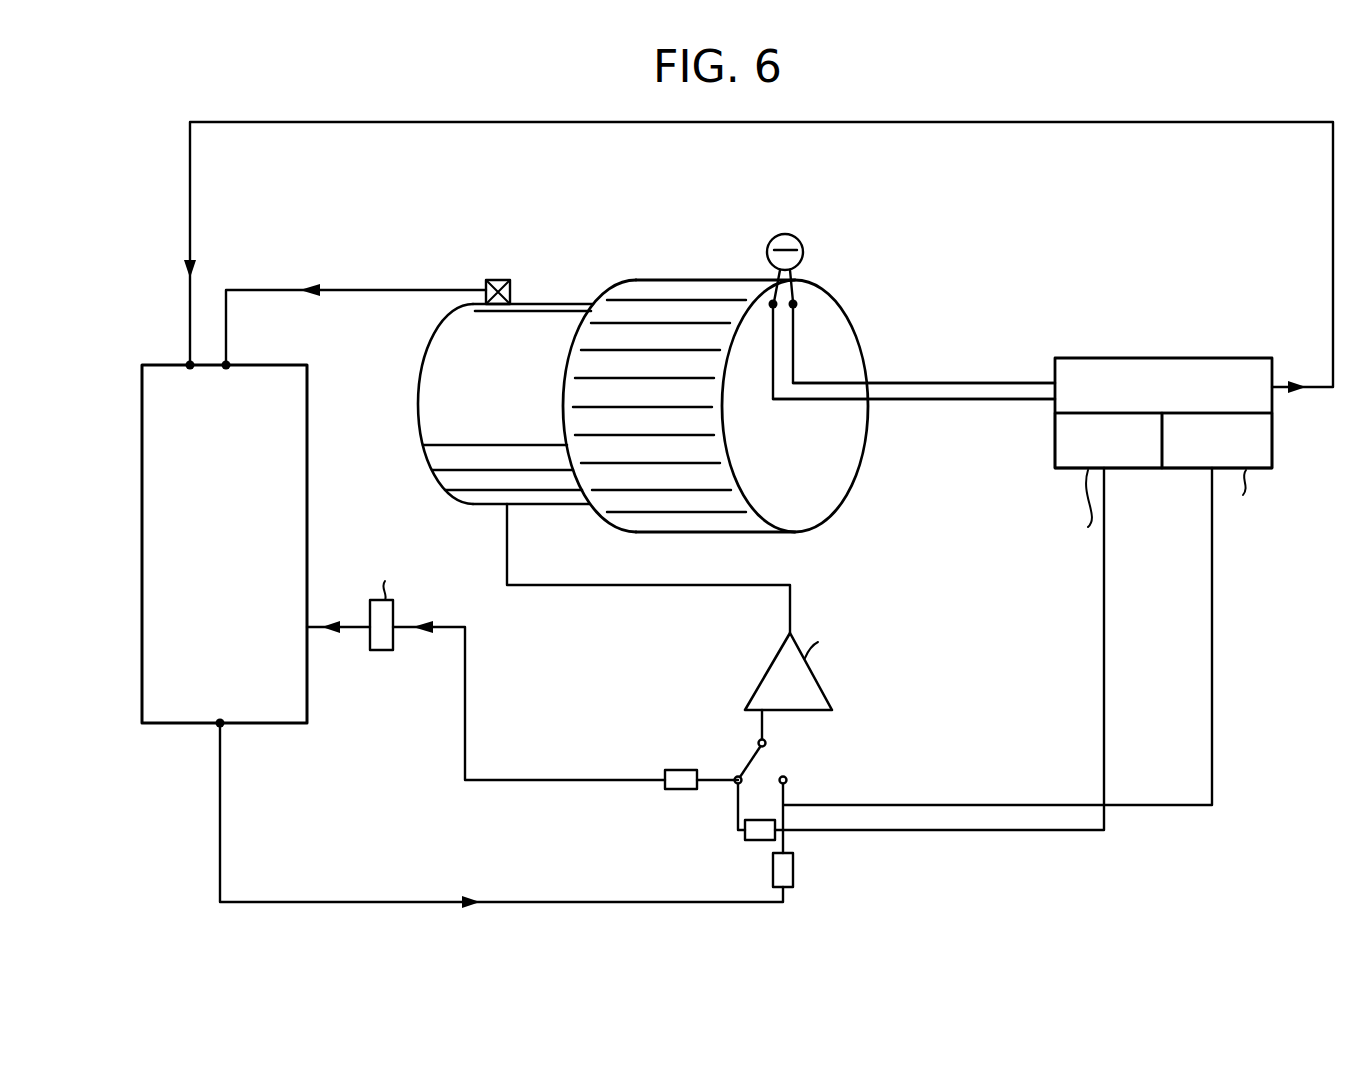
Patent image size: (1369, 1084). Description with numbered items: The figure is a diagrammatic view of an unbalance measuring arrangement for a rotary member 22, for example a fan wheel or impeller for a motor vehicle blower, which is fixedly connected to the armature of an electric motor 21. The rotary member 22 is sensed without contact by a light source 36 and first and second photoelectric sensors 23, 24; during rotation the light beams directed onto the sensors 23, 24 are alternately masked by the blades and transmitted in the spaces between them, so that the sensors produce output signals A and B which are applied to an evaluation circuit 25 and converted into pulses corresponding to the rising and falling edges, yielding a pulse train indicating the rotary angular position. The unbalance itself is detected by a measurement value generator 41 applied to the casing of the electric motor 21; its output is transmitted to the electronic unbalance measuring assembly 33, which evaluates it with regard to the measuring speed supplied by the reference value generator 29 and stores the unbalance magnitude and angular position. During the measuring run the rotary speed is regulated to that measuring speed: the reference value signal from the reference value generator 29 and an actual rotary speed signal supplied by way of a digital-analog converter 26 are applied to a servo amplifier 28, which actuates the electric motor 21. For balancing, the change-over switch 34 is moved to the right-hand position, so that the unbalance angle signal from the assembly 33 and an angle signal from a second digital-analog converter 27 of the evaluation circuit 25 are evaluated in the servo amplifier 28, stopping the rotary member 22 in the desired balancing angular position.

The electric motor 21 is at (478, 418).
The rotary member 22 is at (812, 508).
The first photoelectric sensor 23 is at (770, 300).
The second photoelectric sensor 24 is at (796, 300).
The evaluation circuit 25 is at (1177, 358).
The digital-analog converter 26 is at (1062, 444).
The digital-analog converter 27 is at (1267, 448).
The servo amplifier 28 is at (813, 695).
The reference value generator 29 is at (385, 650).
The electronic unbalance measuring assembly 33 is at (142, 612).
The change-over switch 34 is at (803, 748).
The light source 36 is at (785, 234).
The measurement value generator 41 is at (499, 280).
The output signal A is at (958, 383).
The output signal B is at (945, 399).